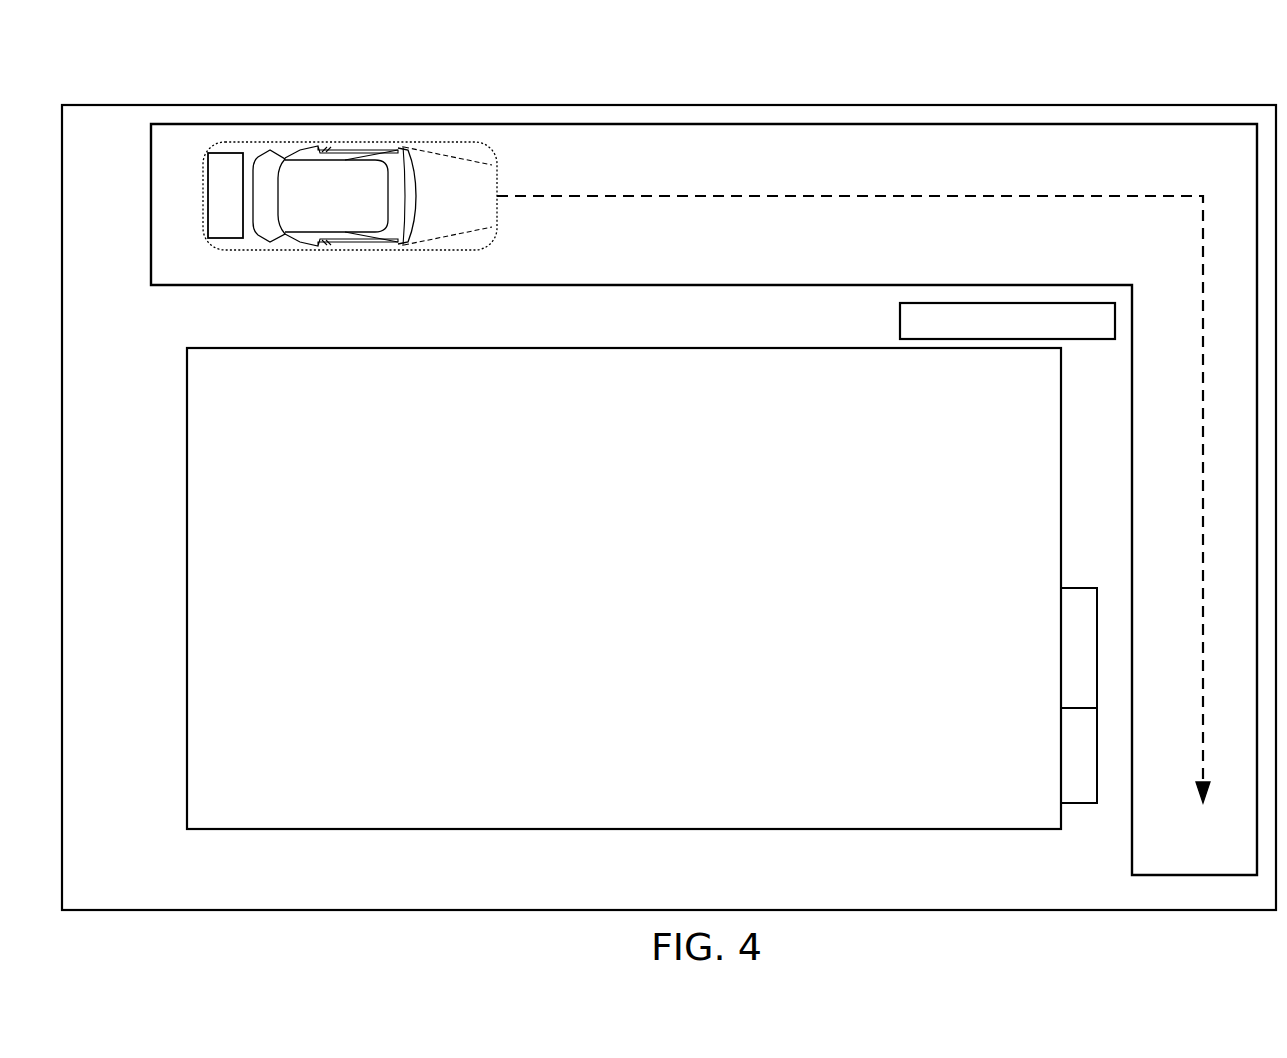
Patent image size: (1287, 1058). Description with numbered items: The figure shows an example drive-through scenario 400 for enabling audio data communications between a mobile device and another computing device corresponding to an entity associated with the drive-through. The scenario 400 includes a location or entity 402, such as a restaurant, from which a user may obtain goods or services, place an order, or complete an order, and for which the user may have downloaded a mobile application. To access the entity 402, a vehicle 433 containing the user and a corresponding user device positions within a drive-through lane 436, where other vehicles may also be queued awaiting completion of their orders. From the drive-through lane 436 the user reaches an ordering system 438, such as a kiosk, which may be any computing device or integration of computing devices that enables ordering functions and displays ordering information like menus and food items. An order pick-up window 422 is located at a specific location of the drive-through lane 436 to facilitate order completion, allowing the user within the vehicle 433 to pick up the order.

The drive-through scenario 400 is at (146, 84).
The vehicle 433 is at (350, 206).
The drive-through lane 436 is at (1126, 166).
The ordering system 438 is at (1025, 333).
The entity 402 is at (640, 615).
The order pick-up window 422 is at (1079, 695).